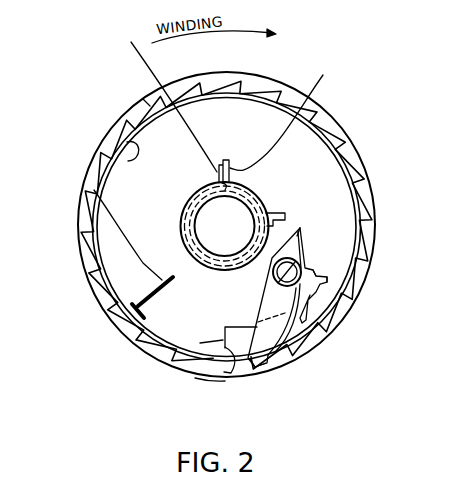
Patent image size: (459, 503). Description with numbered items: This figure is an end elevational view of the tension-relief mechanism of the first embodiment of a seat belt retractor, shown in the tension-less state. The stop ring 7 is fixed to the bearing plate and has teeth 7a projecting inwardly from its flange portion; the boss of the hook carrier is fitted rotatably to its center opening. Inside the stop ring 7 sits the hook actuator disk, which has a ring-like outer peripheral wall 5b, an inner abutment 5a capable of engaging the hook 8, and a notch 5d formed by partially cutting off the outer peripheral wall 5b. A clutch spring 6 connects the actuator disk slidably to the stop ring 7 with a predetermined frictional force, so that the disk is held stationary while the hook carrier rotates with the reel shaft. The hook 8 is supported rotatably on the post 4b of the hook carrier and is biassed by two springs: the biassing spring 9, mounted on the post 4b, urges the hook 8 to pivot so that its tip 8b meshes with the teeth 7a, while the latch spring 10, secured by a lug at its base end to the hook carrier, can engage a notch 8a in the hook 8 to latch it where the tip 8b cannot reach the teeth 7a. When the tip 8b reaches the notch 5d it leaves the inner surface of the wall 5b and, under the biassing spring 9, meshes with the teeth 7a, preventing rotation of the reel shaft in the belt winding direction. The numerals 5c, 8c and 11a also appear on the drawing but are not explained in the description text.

The post 4b is at (270, 277).
The inner abutment 5a is at (92, 188).
The outer peripheral wall 5b is at (130, 136).
The ratchet tooth 5c is at (147, 104).
The notch 5d is at (233, 373).
The clutch spring 6 is at (284, 116).
The stop ring 7 is at (269, 80).
The teeth 7a is at (131, 42).
The hook 8 is at (272, 292).
The notch 8a is at (312, 268).
The tip 8b is at (255, 372).
The pawl apex 8c is at (300, 237).
The biassing spring 9 is at (225, 328).
The latch spring 10 is at (337, 278).
The housing wall 11a is at (209, 380).